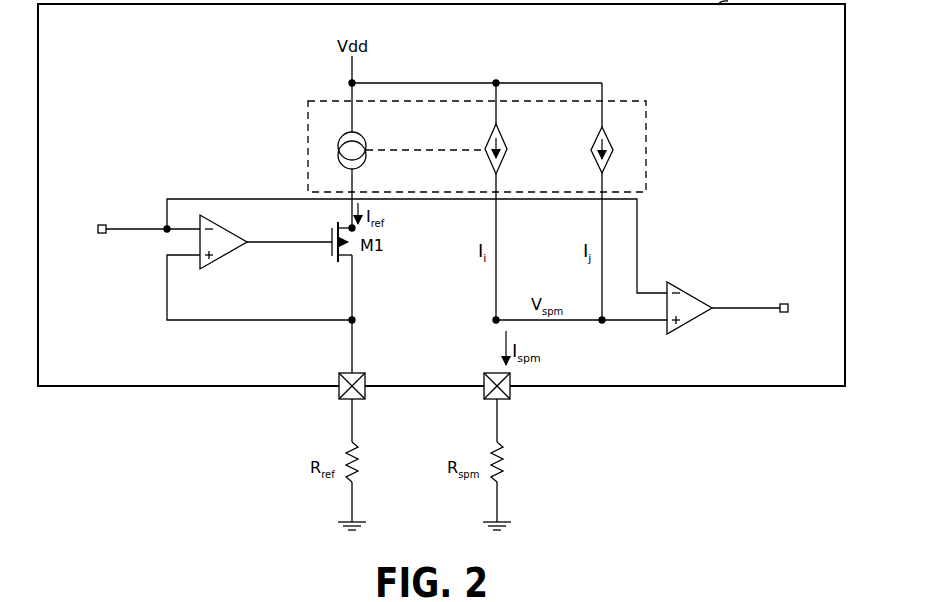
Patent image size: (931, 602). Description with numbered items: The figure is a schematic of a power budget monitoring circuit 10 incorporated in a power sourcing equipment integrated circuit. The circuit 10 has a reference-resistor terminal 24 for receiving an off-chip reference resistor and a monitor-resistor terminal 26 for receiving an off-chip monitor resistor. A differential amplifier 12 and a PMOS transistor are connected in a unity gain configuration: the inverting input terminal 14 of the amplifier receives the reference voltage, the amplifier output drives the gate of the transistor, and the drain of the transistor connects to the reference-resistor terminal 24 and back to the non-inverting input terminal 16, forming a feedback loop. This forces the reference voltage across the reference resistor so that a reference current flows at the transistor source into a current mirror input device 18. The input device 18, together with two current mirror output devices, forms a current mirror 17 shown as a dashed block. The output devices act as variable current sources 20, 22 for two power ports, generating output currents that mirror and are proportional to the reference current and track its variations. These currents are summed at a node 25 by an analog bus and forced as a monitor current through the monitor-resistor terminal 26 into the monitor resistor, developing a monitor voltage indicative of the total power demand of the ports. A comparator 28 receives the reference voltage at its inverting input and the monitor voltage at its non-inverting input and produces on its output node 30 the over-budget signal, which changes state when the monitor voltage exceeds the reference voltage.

The power budget monitoring circuit 10 is at (650, 73).
The differential amplifier 12 is at (228, 253).
The inverting input terminal 14 is at (101, 235).
The non-inverting input terminal 16 is at (195, 321).
The current mirror 17 is at (308, 114).
The current mirror input device 18 is at (362, 138).
The variable current source 20 is at (503, 140).
The variable current source 22 is at (610, 141).
The SPMRef terminal 24 is at (366, 397).
The node 25 is at (493, 320).
The SPM terminal 26 is at (511, 397).
The comparator 28 is at (685, 289).
The node 30 is at (748, 309).